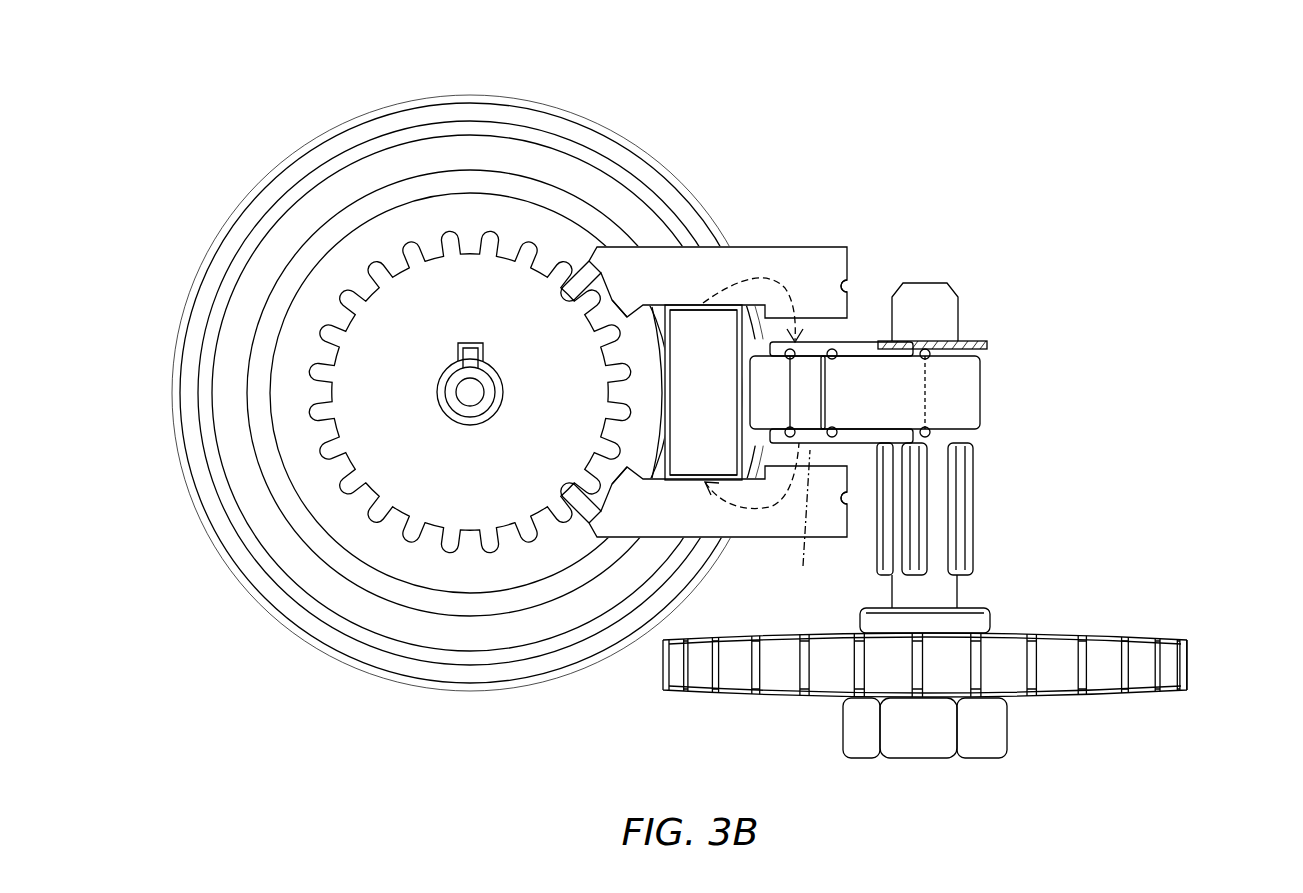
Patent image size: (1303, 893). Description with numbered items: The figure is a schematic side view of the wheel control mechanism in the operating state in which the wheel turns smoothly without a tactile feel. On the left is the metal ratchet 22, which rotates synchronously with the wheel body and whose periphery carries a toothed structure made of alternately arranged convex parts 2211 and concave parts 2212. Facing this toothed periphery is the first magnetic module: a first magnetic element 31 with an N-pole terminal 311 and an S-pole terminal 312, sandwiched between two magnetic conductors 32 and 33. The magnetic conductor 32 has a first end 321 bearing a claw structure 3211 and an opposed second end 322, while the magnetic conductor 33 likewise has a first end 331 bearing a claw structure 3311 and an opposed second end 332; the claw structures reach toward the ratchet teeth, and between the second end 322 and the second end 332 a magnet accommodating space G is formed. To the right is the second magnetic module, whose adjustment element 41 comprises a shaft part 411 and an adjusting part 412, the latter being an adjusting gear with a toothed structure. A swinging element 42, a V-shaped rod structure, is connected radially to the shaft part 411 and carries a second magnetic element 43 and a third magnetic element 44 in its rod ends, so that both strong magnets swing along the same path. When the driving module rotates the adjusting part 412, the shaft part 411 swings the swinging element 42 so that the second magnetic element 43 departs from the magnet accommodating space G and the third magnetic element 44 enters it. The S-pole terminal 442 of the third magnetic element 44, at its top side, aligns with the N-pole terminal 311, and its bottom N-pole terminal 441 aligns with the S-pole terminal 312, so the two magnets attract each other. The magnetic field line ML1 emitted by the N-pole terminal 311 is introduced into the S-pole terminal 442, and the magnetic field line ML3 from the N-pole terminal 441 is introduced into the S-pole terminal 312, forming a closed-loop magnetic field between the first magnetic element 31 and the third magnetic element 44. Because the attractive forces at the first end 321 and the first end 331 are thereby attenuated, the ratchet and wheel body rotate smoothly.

The metal ratchet 22 is at (372, 440).
The convex parts 2211 is at (580, 283).
The concave parts 2212 is at (415, 522).
The first magnetic element 31 is at (698, 395).
The N-pole terminal 311 is at (697, 320).
The S-pole terminal 312 is at (683, 460).
The magnetic conductor 32 is at (755, 260).
The first end 321 is at (622, 257).
The claw structure 3211 is at (595, 267).
The second end 322 is at (822, 262).
The magnetic conductor 33 is at (763, 523).
The first end 331 is at (625, 530).
The claw structure 3311 is at (585, 518).
The second end 332 is at (840, 528).
The adjustment element 41 is at (1102, 655).
The shaft part 411 is at (945, 478).
The adjusting part 412 is at (1187, 660).
The swinging element 42 is at (952, 392).
The second magnetic element 43 is at (913, 340).
The third magnetic element 44 is at (835, 342).
The N-pole terminal 441 is at (817, 437).
The S-pole terminal 442 is at (818, 340).
The magnetic field line ML1 is at (778, 273).
The magnetic field line ML3 is at (745, 560).
The magnet accommodating space G is at (803, 520).